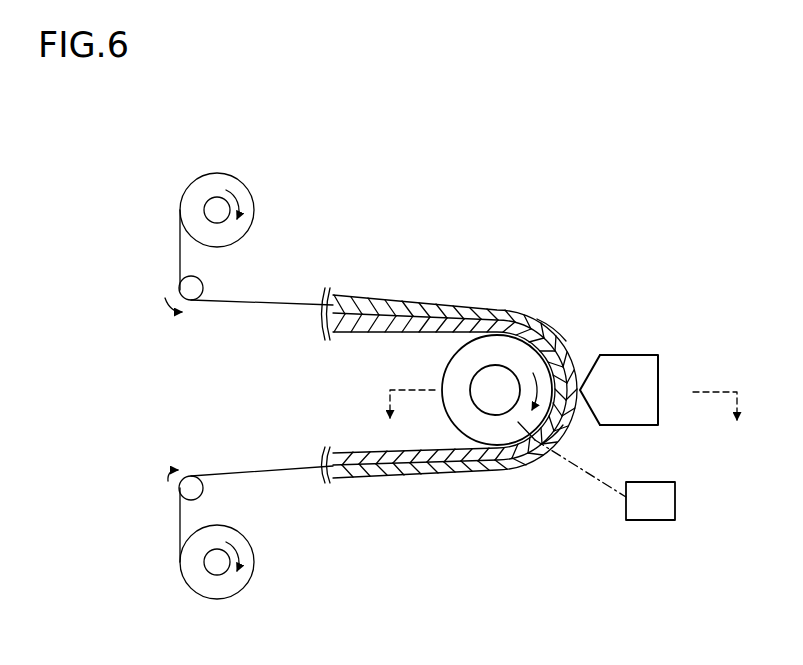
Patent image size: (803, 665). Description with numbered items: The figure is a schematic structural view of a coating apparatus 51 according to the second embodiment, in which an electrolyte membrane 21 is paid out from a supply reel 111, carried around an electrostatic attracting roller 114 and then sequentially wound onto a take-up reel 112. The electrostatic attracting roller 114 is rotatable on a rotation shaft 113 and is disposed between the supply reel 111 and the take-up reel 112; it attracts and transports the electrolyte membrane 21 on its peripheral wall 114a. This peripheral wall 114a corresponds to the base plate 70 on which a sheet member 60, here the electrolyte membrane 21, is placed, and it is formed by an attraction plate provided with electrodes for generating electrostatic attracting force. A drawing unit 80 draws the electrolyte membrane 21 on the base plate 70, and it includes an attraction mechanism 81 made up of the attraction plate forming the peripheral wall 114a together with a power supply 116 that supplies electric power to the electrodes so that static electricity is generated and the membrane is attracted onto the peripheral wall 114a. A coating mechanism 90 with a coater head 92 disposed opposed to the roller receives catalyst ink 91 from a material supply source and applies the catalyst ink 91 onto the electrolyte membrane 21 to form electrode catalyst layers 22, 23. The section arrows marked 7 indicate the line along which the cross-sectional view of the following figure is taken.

The coating apparatus 51 is at (566, 190).
The take-up reel 112 is at (217, 180).
The supply reel 111 is at (218, 592).
The sheet member 60 is at (233, 307).
The electrode catalyst layer 23 is at (353, 297).
The electrolyte membrane 21 is at (405, 300).
The electrode catalyst layer 22 is at (367, 330).
The base plate 70 is at (603, 270).
The electrostatic attracting roller 114 is at (515, 352).
The rotation shaft 113 is at (495, 375).
The peripheral wall 114a is at (553, 335).
The drawing unit 80 is at (568, 415).
The coating mechanism 90 is at (658, 337).
The coater head 92 is at (652, 415).
The catalyst ink 91 is at (560, 347).
The attraction mechanism 81 is at (595, 483).
The power supply 116 is at (652, 520).
The line 7- 7 is at (563, 424).